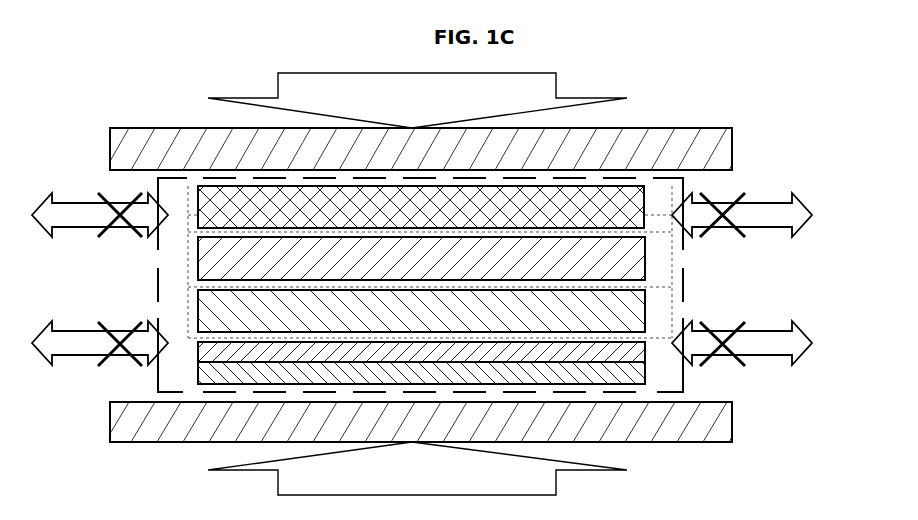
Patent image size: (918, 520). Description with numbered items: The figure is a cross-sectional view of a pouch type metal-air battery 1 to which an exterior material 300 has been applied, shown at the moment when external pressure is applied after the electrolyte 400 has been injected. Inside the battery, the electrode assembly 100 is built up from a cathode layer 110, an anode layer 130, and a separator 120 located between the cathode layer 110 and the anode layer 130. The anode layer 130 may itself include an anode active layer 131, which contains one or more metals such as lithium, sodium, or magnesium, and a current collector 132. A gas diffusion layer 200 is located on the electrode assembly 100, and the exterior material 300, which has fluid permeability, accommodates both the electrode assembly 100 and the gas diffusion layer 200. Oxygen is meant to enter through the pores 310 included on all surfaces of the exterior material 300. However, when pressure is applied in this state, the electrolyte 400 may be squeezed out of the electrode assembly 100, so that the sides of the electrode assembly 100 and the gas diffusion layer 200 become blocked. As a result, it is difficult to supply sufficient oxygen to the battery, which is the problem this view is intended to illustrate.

The pouch type metal-air battery 1 is at (170, 88).
The electrode assembly 100 is at (557, 324).
The cathode layer 110 is at (645, 262).
The separator 120 is at (645, 295).
The anode layer 130 is at (525, 377).
The anode active layer 131 is at (645, 352).
The current collector 132 is at (645, 375).
The gas diffusion layer 200 is at (637, 197).
The exterior material 300 is at (445, 229).
The pores 310 is at (647, 178).
The electrolyte 400 is at (172, 345).